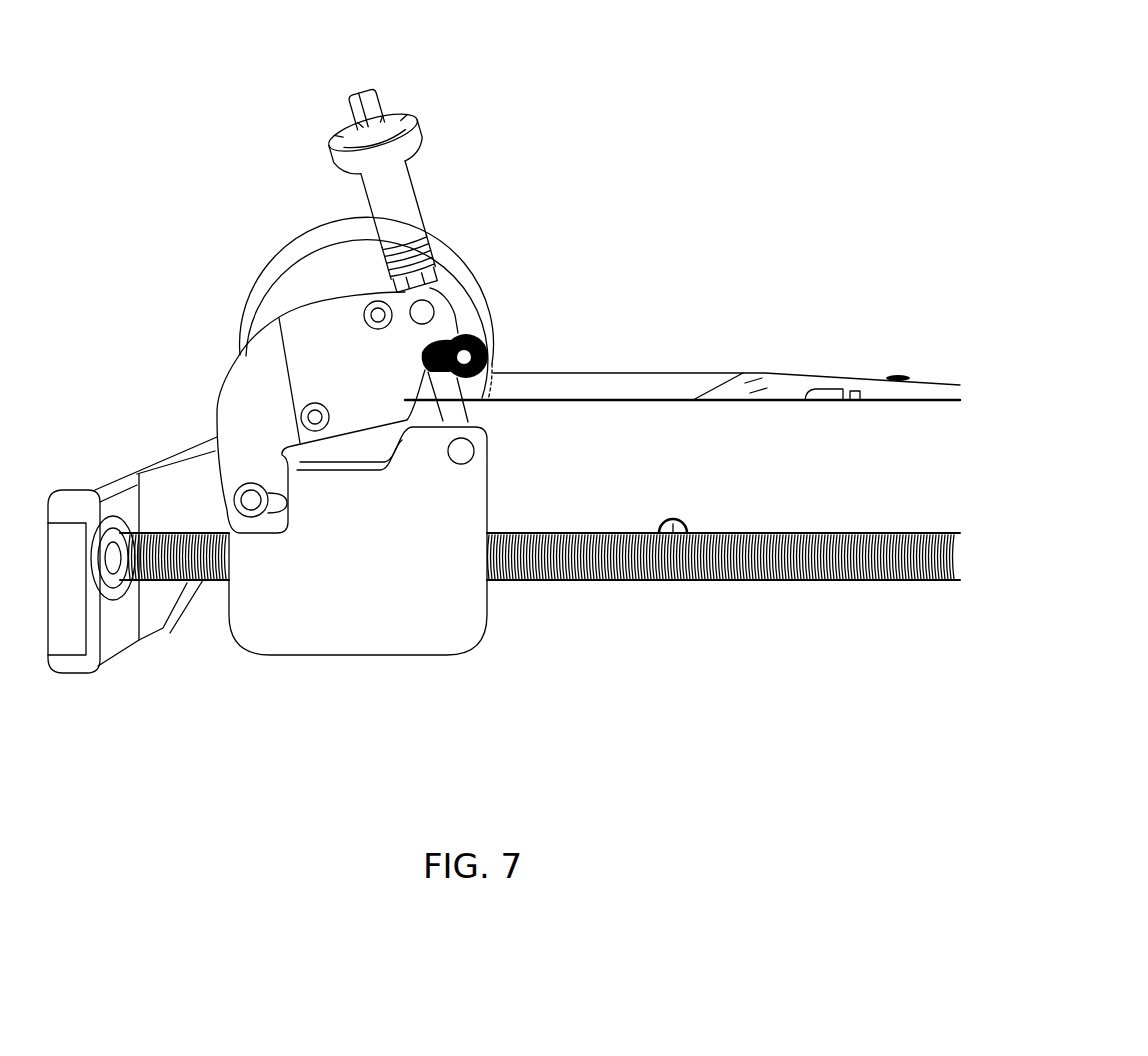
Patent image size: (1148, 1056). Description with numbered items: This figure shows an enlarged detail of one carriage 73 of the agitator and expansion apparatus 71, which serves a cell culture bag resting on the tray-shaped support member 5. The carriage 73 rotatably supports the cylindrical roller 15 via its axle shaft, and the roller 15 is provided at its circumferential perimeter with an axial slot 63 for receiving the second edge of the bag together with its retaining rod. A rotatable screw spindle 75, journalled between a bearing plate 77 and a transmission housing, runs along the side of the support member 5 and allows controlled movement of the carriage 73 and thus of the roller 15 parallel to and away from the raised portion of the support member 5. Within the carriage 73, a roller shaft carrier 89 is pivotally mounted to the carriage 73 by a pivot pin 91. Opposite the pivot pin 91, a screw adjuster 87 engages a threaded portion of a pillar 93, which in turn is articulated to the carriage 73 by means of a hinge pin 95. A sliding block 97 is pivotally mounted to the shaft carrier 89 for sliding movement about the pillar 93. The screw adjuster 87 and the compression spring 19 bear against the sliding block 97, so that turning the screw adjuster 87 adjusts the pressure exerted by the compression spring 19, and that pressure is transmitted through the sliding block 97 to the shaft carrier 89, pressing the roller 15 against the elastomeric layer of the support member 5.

The agitator and expansion apparatus 71 is at (614, 143).
The support member 5 is at (775, 481).
The cylindrical roller 15 is at (315, 280).
The compression spring 19 is at (430, 247).
The screw adjuster 87 is at (390, 197).
The sliding block 97 is at (422, 312).
The axial slot 63 is at (492, 353).
The roller shaft carrier 89 is at (303, 347).
The pivot pin 91 is at (251, 500).
The carriage 73 is at (303, 622).
The pillar 93 is at (448, 403).
The hinge pin 95 is at (461, 451).
The screw spindle 75 is at (594, 563).
The bearing plate 77 is at (68, 622).